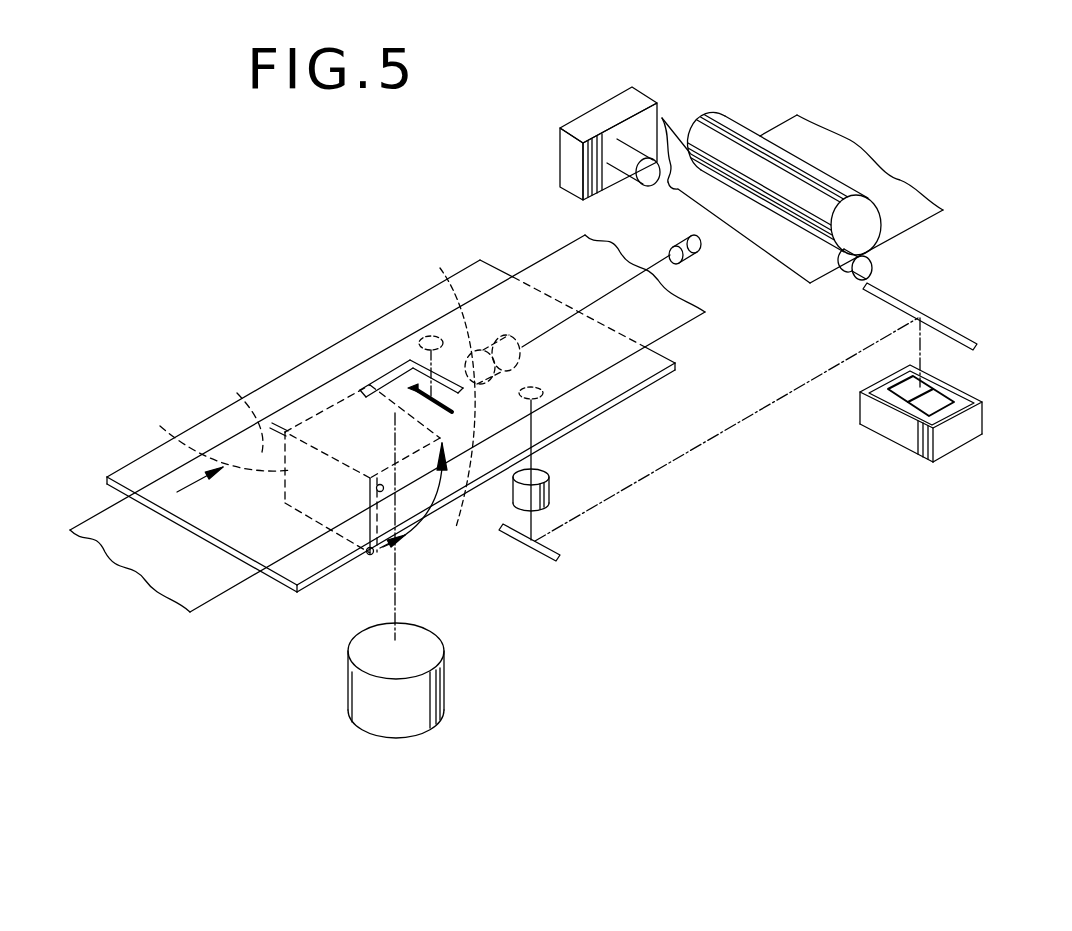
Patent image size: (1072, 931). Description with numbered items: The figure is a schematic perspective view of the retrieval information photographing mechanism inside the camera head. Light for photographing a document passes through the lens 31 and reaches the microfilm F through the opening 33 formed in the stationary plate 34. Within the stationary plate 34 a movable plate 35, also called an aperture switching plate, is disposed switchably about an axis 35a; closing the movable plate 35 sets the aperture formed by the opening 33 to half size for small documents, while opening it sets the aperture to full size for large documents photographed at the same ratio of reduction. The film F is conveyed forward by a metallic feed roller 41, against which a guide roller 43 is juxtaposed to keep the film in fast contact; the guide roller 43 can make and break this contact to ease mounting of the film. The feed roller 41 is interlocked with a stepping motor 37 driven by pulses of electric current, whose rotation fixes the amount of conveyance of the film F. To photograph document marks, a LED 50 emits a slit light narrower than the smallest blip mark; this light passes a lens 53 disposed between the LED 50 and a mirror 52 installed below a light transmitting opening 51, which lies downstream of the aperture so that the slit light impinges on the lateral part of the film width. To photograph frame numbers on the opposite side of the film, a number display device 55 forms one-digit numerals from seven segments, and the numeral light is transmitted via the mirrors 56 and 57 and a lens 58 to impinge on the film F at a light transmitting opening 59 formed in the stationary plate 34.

The microfilm F is at (550, 255).
The lens 31 is at (418, 697).
The opening 33 is at (465, 505).
The stationary plate 34 is at (292, 370).
The movable plate 35 is at (175, 428).
The axis 35a is at (237, 393).
The stepping motor 37 is at (560, 157).
The feed roller 41 is at (858, 215).
The guide roller 43 is at (875, 268).
The LED 50 is at (687, 241).
The light transmitting opening 51 is at (424, 335).
The mirror 52 is at (395, 372).
The lens 53 is at (450, 283).
The number display device 55 is at (963, 385).
The mirror 56 is at (963, 332).
The mirror 57 is at (565, 552).
The lens 58 is at (547, 483).
The light transmitting opening 59 is at (545, 396).